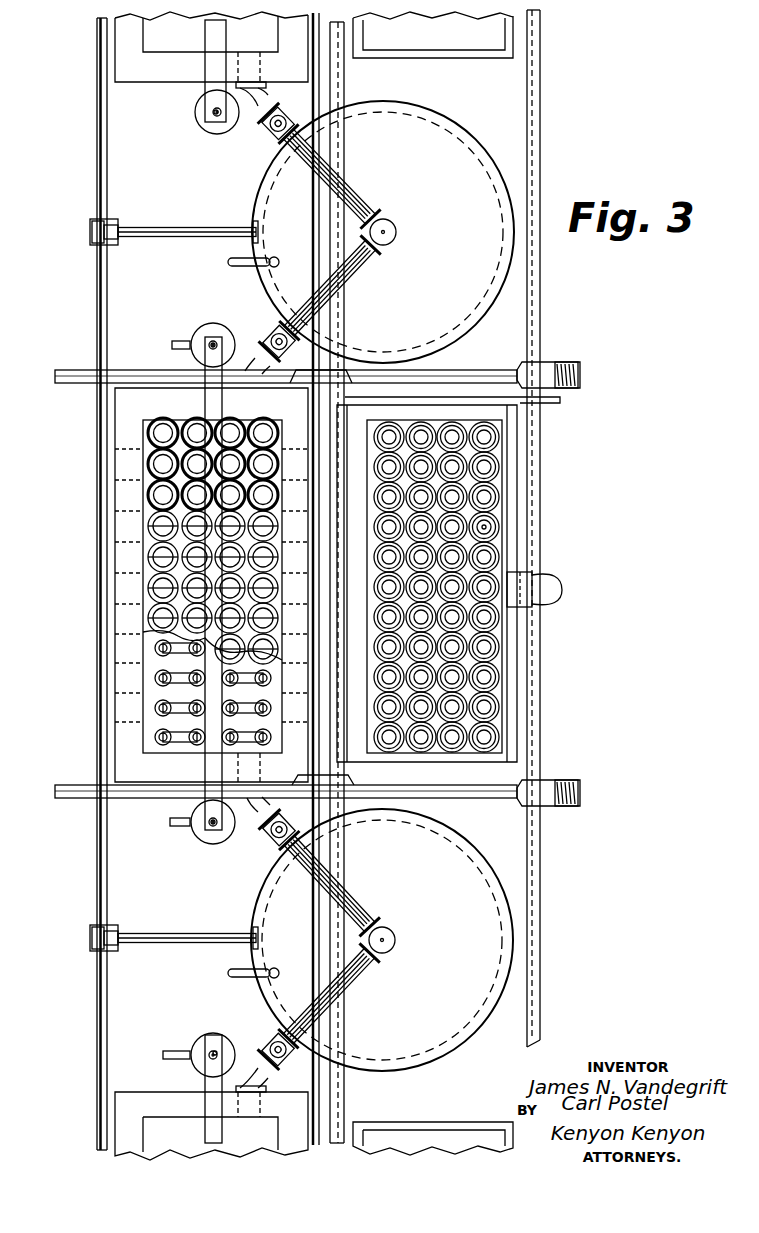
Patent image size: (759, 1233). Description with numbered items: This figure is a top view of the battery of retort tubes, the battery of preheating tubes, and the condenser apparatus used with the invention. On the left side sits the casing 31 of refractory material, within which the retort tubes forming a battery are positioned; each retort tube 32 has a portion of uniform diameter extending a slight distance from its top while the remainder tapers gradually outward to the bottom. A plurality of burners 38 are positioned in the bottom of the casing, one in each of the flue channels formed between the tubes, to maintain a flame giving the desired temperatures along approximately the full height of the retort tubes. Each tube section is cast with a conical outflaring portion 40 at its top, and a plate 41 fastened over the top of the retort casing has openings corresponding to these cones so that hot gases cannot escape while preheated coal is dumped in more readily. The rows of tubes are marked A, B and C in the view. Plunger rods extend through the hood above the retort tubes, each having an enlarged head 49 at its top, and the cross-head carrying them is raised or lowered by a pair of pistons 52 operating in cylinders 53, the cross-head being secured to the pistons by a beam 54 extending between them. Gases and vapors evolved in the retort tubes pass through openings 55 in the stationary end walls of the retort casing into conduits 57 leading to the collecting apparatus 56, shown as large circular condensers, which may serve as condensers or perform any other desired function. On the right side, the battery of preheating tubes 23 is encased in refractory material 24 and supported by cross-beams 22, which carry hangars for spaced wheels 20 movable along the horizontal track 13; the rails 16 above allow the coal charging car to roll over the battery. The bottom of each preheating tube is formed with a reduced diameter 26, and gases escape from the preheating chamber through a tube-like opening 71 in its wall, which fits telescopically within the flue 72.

The horizontal track 13 is at (467, 377).
The rails 16 is at (335, 842).
The spaced wheels 20 is at (577, 367).
The cross-beams 22 is at (522, 408).
The preheating tubes 23 is at (500, 470).
The refractory material 24 is at (510, 716).
The reduced diameter bottom 26 is at (488, 526).
The casing 31 is at (125, 40).
The retort tube 32 is at (160, 432).
The burners 38 is at (113, 614).
The conical outflaring portion 40 is at (278, 634).
The plate 41 is at (148, 540).
The enlarged head 49 is at (150, 707).
The pistons 52 is at (213, 120).
The cylinders 53 is at (225, 124).
The beam 54 is at (217, 60).
The openings 55 is at (244, 370).
The collecting apparatus 56 is at (382, 586).
The spray tube 57 is at (358, 195).
The opening 71 is at (537, 583).
The flue 72 is at (552, 600).
The row group A is at (152, 697).
The row group B is at (150, 572).
The row group C is at (145, 474).